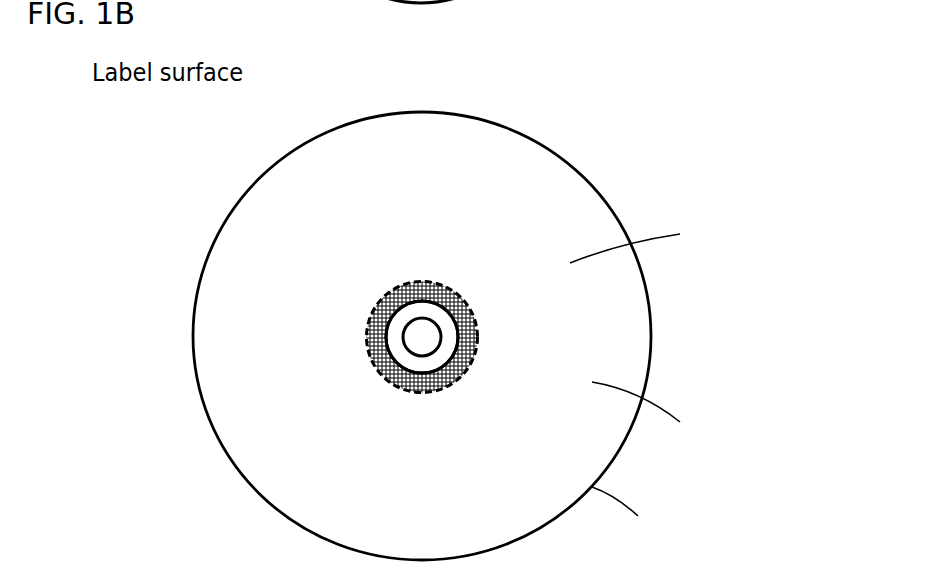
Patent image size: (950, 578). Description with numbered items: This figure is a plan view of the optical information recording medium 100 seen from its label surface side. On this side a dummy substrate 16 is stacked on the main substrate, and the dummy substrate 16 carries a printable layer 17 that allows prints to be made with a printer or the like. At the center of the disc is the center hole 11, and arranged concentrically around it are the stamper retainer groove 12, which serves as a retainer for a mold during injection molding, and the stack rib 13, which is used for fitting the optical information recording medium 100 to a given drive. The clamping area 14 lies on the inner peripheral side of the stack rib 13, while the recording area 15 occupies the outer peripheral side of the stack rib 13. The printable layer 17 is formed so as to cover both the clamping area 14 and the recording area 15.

The optical information recording medium 100 is at (553, 124).
The center hole 11 is at (422, 345).
The stamper retainer groove 12 is at (465, 367).
The stack rib 13 is at (477, 341).
The clamping area 14 is at (463, 317).
The recording area 15 is at (643, 238).
The dummy substrate 16 is at (740, 510).
The printable layer 17 is at (747, 410).